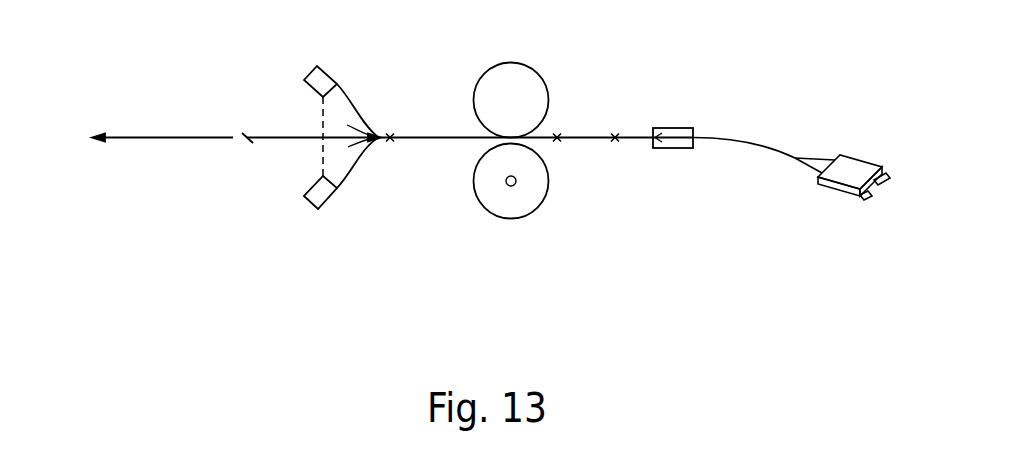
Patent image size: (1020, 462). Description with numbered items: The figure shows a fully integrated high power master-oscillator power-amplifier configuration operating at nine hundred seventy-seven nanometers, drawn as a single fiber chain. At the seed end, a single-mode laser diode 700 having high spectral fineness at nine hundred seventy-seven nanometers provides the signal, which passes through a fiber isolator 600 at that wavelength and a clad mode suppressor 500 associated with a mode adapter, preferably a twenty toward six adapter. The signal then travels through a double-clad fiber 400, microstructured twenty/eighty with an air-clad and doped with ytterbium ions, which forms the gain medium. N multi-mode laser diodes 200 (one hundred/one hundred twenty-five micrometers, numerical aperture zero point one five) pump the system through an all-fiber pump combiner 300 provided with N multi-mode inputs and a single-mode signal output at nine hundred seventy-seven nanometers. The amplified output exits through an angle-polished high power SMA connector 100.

The angle-polished high power SMA connector 100 is at (248, 162).
The multi-mode laser diodes 200 is at (327, 222).
The all-fiber pump combiner 300 is at (373, 162).
The double-clad fiber 400 is at (515, 236).
The clad mode suppressor 500 is at (588, 162).
The fiber isolator 600 is at (672, 161).
The single-mode laser diode 700 is at (837, 214).